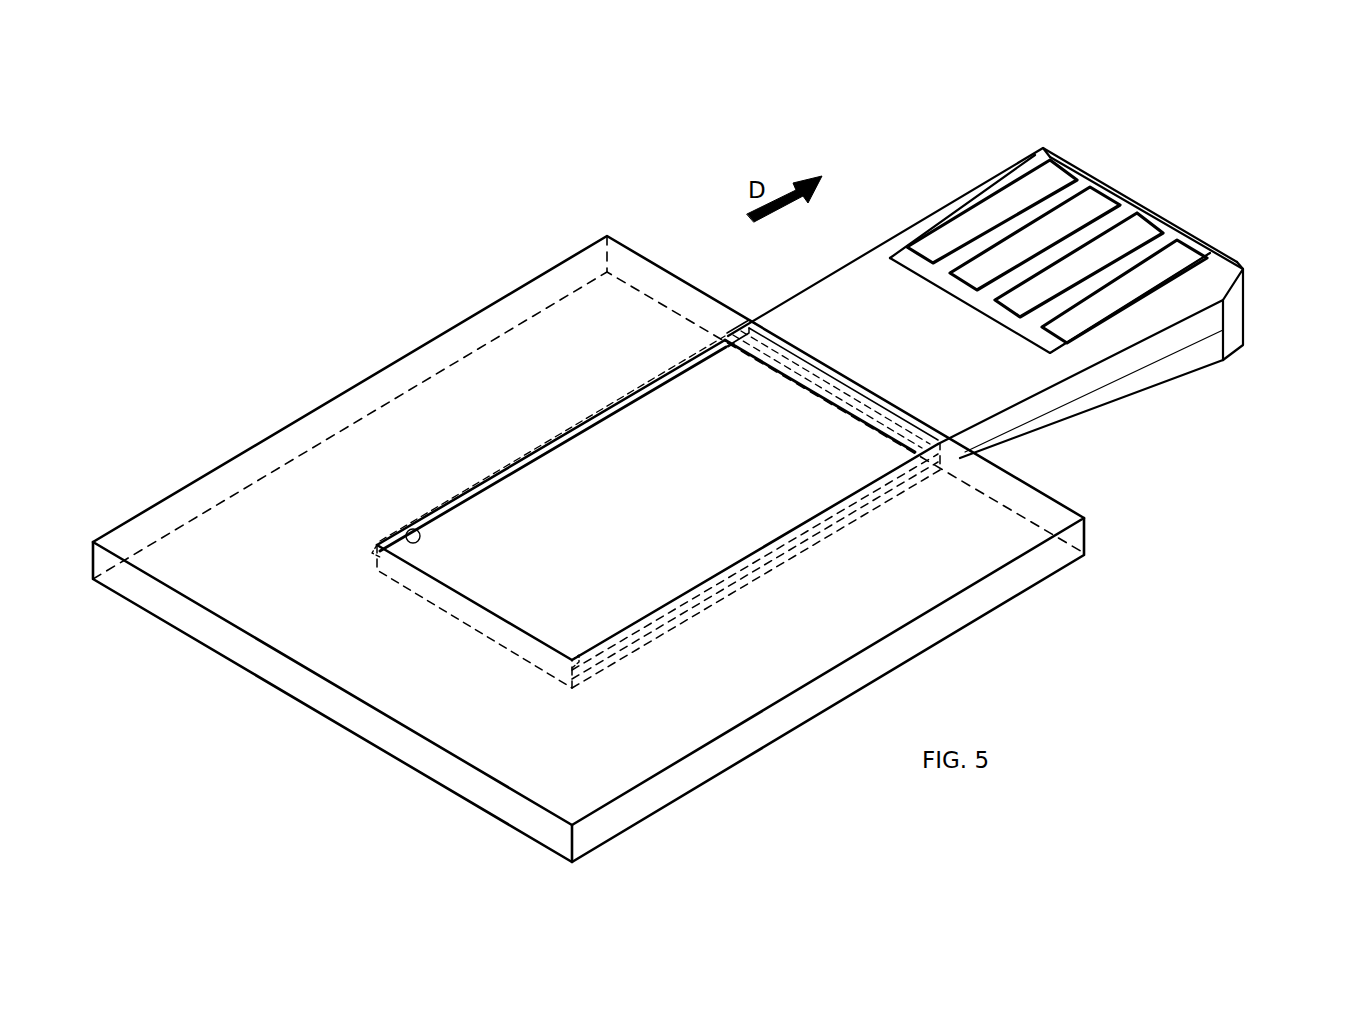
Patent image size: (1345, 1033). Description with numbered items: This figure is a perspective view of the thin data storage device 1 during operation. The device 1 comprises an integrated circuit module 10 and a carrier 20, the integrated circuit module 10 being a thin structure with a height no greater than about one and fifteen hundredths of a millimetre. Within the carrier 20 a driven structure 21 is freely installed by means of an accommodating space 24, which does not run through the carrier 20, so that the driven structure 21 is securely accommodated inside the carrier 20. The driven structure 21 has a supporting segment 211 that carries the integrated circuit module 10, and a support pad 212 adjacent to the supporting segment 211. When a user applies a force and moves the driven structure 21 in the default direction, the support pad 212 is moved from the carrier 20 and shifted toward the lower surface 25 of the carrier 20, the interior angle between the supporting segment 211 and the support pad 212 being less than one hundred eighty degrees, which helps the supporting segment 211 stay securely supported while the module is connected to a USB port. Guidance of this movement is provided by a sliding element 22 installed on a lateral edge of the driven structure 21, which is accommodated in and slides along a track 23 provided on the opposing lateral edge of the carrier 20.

The thin data storage device 1 is at (205, 166).
The integrated circuit module 10 is at (975, 148).
The carrier 20 is at (348, 236).
The driven structure 21 is at (1176, 395).
The supporting segment 211 is at (1060, 390).
The support pad 212 is at (1243, 330).
The sliding element 22 is at (723, 345).
The track 23 is at (410, 536).
The accommodating space 24 is at (679, 522).
The lower surface 25 is at (1046, 400).